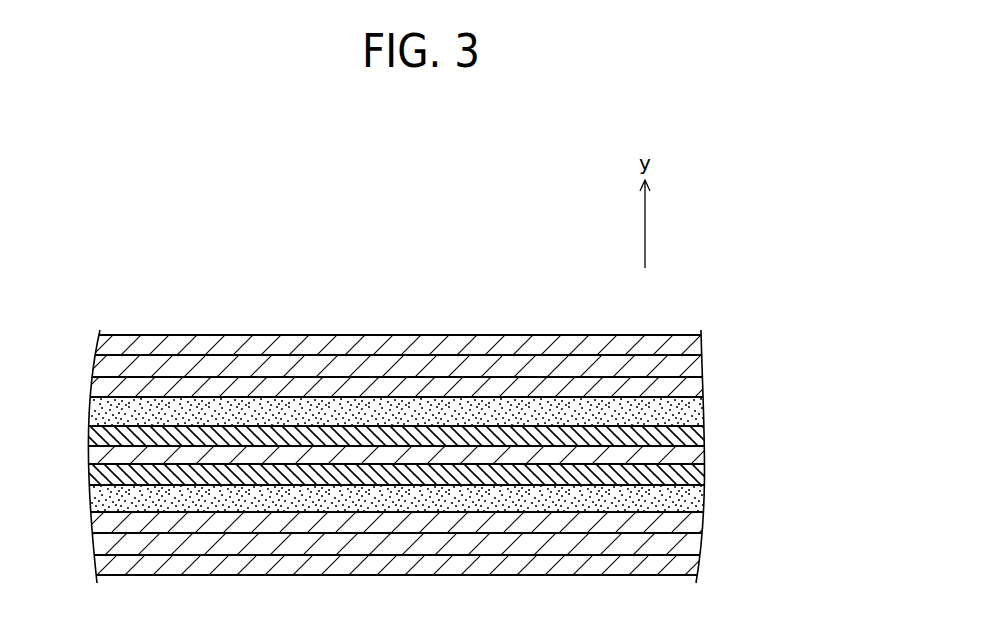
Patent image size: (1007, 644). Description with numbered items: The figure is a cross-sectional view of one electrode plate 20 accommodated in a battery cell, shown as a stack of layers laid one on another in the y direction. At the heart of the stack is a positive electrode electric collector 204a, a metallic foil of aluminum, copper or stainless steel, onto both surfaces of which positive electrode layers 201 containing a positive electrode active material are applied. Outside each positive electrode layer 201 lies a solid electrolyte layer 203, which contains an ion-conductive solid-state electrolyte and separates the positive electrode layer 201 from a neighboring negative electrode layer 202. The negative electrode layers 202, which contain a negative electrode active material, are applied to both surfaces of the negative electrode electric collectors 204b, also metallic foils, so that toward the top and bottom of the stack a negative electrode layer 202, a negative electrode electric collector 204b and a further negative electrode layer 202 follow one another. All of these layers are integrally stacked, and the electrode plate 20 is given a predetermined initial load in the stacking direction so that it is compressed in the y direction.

The electrode plate 20 is at (392, 255).
The positive electrode layer 201 is at (702, 436).
The negative electrode layer 202 is at (703, 343).
The solid electrolyte layer 203 is at (702, 412).
The positive electrode electric collector 204a is at (688, 455).
The negative electrode electric collector 204b is at (702, 366).